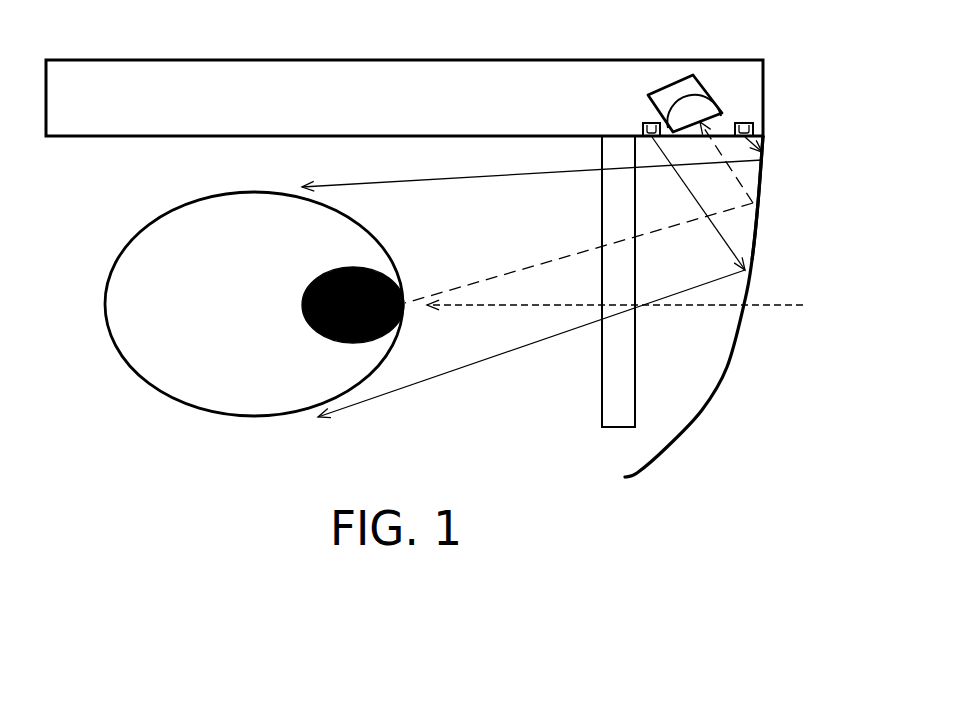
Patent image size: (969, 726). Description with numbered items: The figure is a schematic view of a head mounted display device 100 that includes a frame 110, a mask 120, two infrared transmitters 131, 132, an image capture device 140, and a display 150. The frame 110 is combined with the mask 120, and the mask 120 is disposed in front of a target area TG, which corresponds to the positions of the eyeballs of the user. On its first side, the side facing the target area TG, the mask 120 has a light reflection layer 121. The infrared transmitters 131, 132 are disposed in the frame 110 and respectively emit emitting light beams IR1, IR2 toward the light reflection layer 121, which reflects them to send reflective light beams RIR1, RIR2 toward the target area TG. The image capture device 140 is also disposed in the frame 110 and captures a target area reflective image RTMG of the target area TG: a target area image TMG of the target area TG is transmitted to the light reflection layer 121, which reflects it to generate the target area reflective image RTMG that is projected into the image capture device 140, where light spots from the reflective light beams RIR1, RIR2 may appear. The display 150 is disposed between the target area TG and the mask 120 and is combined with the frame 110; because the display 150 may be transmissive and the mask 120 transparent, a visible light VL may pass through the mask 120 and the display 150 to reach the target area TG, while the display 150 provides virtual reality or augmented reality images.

The head mounted display device 100 is at (851, 491).
The frame 110 is at (377, 60).
The mask 120 is at (726, 376).
The light reflection layer 121 is at (758, 175).
The infrared transmitter 131 is at (643, 123).
The infrared transmitter 132 is at (748, 122).
The image capture device 140 is at (668, 86).
The display 150 is at (602, 398).
The emitting light beam IR1 is at (762, 152).
The emitting light beam IR2 is at (725, 242).
The reflective light beam RIR1 is at (441, 177).
The reflective light beam RIR2 is at (458, 370).
The target area image TMG is at (548, 263).
The target area reflective image RTMG is at (718, 133).
The visible light VL is at (790, 305).
The target area TG is at (148, 403).